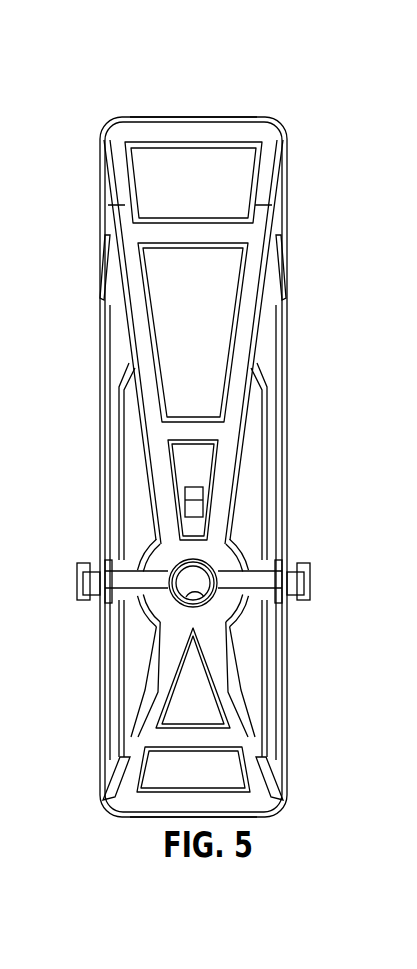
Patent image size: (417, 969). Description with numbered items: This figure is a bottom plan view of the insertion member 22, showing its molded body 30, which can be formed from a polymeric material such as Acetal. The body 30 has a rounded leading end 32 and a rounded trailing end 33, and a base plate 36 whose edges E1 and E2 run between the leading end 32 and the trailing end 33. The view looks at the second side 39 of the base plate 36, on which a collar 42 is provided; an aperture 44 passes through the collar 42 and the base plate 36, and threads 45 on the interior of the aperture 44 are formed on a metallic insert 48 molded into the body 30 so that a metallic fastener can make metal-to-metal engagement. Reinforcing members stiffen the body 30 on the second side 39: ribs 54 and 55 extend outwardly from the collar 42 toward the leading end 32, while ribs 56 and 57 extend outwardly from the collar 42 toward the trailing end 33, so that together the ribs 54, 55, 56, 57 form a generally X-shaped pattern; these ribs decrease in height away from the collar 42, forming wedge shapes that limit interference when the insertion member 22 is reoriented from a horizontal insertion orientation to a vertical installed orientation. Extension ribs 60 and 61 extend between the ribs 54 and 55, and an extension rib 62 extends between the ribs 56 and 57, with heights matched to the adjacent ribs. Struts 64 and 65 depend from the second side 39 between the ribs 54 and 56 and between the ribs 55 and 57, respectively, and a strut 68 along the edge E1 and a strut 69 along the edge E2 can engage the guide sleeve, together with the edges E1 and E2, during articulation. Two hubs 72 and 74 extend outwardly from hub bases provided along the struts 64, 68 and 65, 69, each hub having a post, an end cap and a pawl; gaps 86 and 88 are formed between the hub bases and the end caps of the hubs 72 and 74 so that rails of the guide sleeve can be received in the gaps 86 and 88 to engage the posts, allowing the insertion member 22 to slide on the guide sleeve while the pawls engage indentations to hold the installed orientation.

The insertion member 22 is at (80, 205).
The body 30 is at (100, 380).
The leading end 32 is at (200, 117).
The trailing end 33 is at (135, 818).
The base plate 36 is at (145, 162).
The second side 39 is at (204, 184).
The collar 42 is at (155, 576).
The aperture 44 is at (158, 583).
The threads 45 is at (200, 598).
The metallic insert 48 is at (238, 555).
The rib 54 is at (135, 300).
The rib 55 is at (245, 328).
The rib 56 is at (160, 682).
The rib 57 is at (235, 705).
The extension rib 60 is at (178, 432).
The extension rib 61 is at (190, 230).
The extension rib 62 is at (193, 742).
The strut 64 is at (118, 452).
The strut 65 is at (267, 450).
The strut 68 is at (100, 507).
The strut 69 is at (283, 497).
The hub 72 is at (68, 582).
The hub 74 is at (318, 583).
The gap 86 is at (90, 614).
The gap 88 is at (297, 614).
The edge E1 is at (100, 760).
The edge E2 is at (287, 383).